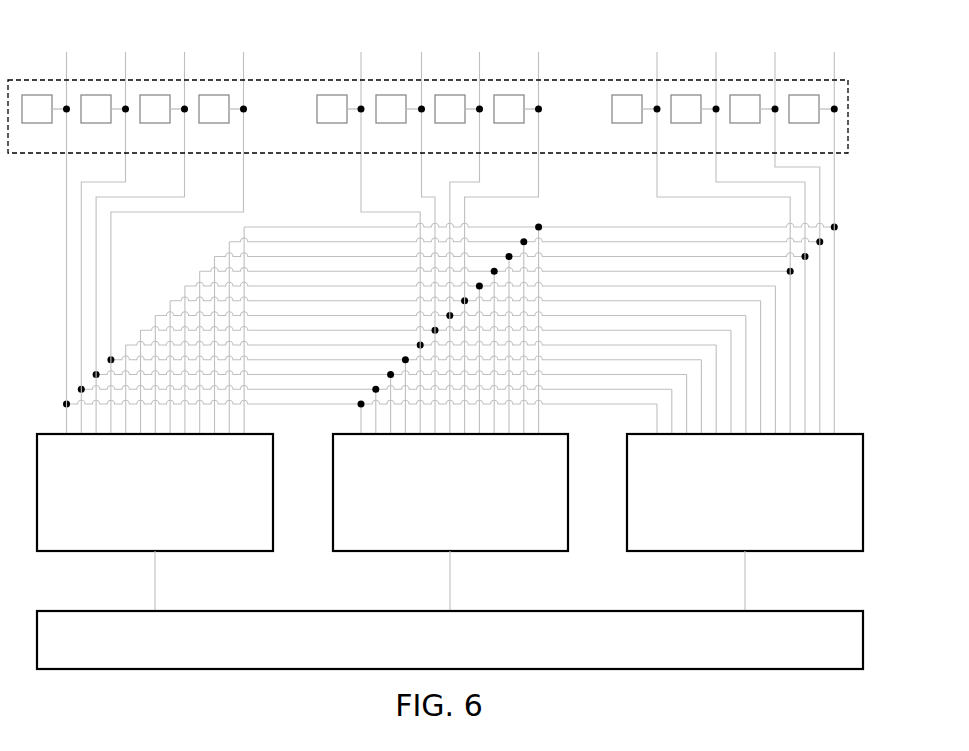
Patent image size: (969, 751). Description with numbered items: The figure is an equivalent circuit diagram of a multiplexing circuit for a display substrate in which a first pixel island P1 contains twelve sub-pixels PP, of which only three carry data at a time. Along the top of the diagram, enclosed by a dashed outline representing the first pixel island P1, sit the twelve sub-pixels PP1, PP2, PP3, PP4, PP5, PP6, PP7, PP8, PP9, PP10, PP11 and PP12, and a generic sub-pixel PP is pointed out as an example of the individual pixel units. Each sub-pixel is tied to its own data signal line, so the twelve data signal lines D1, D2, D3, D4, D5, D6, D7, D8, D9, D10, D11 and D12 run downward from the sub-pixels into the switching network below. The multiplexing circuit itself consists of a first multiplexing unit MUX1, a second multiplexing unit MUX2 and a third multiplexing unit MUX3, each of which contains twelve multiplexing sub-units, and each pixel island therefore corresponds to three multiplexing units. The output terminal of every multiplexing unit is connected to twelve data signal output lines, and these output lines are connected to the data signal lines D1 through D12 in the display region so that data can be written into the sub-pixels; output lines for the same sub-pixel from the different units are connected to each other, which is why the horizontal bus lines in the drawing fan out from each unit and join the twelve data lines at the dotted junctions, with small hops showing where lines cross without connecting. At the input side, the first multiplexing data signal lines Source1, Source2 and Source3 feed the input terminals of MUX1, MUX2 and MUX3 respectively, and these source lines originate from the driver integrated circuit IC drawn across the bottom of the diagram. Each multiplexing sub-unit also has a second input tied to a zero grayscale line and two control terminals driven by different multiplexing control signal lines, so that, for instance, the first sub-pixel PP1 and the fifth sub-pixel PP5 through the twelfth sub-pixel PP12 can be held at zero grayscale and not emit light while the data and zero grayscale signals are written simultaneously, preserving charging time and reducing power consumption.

The data signal line D1 is at (65, 232).
The data signal line D2 is at (110, 232).
The data signal line D3 is at (147, 232).
The data signal line D4 is at (184, 232).
The data signal line D5 is at (383, 232).
The data signal line D6 is at (421, 232).
The data signal line D7 is at (471, 232).
The data signal line D8 is at (509, 232).
The data signal line D9 is at (716, 232).
The data signal line D10 is at (751, 232).
The data signal line D11 is at (788, 232).
The data signal line D12 is at (836, 232).
The first sub-pixel PP1 is at (46, 124).
The sub-pixel PP2 is at (105, 124).
The sub-pixel PP3 is at (164, 124).
The sub-pixel PP4 is at (223, 124).
The fifth sub-pixel PP5 is at (341, 124).
The sub-pixel PP6 is at (400, 124).
The sub-pixel PP7 is at (459, 124).
The sub-pixel PP8 is at (518, 124).
The sub-pixel PP9 is at (636, 124).
The sub-pixel PP10 is at (691, 124).
The sub-pixel PP11 is at (750, 124).
The twelfth sub-pixel PP12 is at (809, 124).
The first pixel island P1 is at (302, 72).
The sub-pixel PP is at (622, 84).
The first multiplexing unit MUX1 is at (155, 492).
The second multiplexing unit MUX2 is at (450, 492).
The third multiplexing unit MUX3 is at (745, 492).
The first multiplexing data signal line Source1 is at (199, 581).
The first multiplexing data signal line Source2 is at (494, 581).
The first multiplexing data signal line Source3 is at (789, 581).
The integrated circuit IC is at (450, 640).